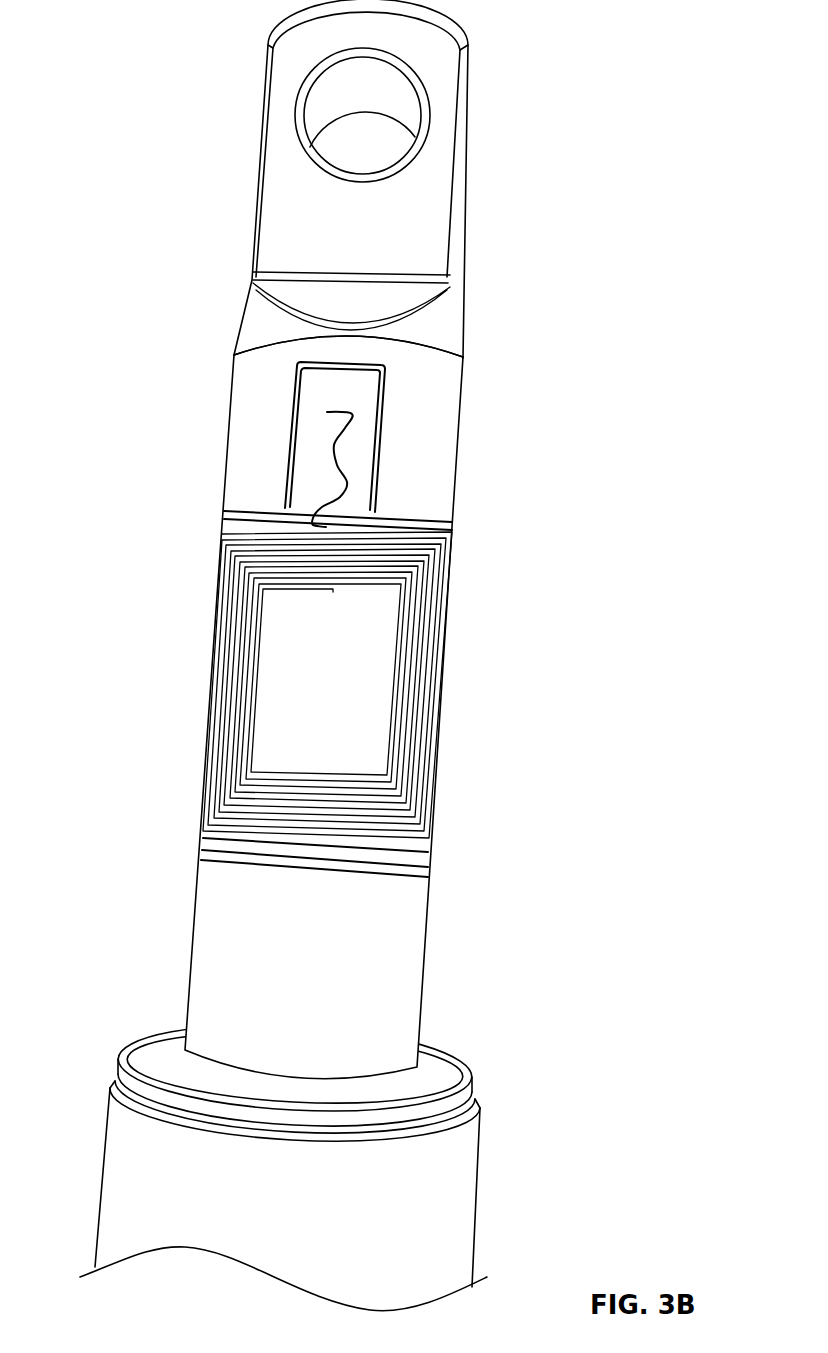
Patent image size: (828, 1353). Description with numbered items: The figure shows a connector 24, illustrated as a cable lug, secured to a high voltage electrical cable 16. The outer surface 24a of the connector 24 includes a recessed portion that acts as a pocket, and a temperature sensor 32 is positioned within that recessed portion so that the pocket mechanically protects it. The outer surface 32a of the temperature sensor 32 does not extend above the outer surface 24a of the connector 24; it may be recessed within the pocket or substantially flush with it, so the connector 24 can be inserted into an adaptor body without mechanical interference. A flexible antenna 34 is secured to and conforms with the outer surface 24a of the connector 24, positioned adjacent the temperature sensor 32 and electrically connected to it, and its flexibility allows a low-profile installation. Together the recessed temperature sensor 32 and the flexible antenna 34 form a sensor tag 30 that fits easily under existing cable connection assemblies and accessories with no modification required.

The high voltage electrical cable 16 is at (115, 1163).
The connector 24 is at (270, 241).
The outer surface of the connector 24a is at (317, 353).
The sensor tag 30 is at (192, 557).
The temperature sensor 32 is at (310, 463).
The outer surface of the temperature sensor 32a is at (322, 410).
The antenna 34 is at (207, 737).